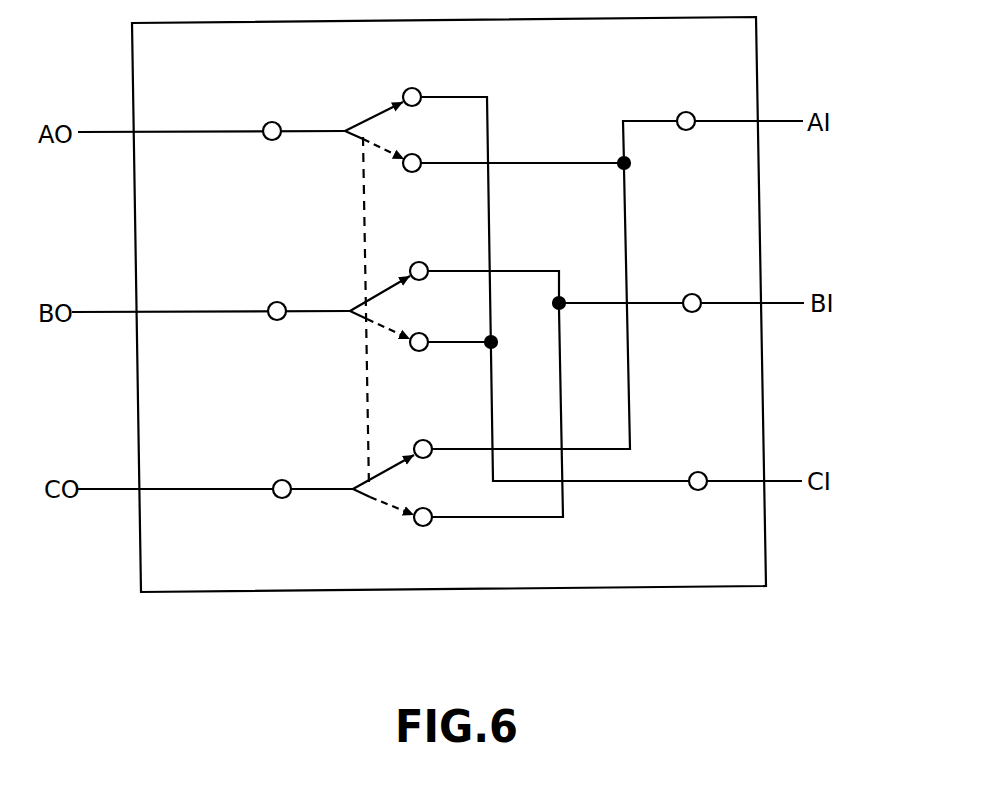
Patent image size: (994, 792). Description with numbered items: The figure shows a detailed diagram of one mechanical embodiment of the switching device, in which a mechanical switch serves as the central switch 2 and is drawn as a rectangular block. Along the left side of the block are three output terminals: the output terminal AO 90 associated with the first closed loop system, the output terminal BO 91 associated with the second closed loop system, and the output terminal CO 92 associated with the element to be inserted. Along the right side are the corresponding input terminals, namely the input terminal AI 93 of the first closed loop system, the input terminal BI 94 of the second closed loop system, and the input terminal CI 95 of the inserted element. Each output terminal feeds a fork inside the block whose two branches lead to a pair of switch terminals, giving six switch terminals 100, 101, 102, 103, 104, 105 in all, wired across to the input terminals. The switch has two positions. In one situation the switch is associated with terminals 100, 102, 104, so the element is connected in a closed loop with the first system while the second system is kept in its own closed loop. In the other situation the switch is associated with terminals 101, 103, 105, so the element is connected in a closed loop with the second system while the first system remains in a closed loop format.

The central switch 2 is at (548, 591).
The output terminal AO 90 is at (271, 141).
The output terminal BO 91 is at (276, 321).
The output terminal CO 92 is at (287, 480).
The input terminal AI 93 is at (685, 131).
The input terminal BI 94 is at (690, 313).
The input terminal CI 95 is at (701, 471).
The terminal 100 is at (419, 89).
The terminal 101 is at (419, 155).
The terminal 102 is at (426, 263).
The terminal 103 is at (426, 334).
The terminal 104 is at (430, 441).
The terminal 105 is at (430, 509).